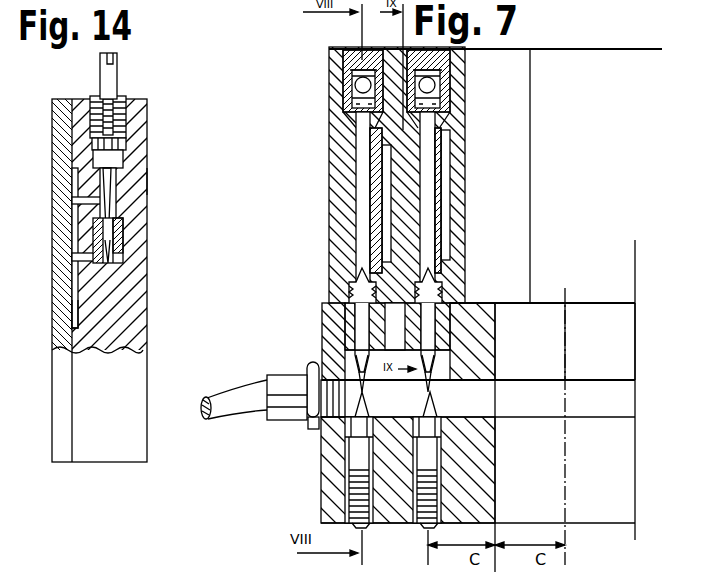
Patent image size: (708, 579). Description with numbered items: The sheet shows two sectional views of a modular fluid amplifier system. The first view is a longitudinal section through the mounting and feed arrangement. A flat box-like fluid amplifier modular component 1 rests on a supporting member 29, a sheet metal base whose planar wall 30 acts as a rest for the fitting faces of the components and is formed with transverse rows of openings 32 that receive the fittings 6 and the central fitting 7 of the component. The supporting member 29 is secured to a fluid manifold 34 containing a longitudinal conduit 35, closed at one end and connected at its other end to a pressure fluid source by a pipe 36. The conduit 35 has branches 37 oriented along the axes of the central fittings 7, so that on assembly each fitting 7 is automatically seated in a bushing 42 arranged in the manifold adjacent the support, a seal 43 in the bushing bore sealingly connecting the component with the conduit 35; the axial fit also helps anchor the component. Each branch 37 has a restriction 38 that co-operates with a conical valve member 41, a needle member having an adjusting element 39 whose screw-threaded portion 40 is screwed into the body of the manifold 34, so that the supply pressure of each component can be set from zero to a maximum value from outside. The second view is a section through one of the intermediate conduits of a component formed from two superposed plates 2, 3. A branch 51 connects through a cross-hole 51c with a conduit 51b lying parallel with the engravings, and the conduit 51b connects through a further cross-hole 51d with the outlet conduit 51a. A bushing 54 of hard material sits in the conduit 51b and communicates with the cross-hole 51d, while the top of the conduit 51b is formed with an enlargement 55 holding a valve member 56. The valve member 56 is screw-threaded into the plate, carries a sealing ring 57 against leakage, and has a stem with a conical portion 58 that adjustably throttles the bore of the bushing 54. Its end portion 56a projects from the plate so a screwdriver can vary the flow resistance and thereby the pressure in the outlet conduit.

In FIG. 7, the fluid amplifier modular component 1 is at (472, 44).
In FIG. 14, the plate 2 is at (62, 384).
In FIG. 14, the plate 3 is at (135, 382).
In FIG. 7, the fitting 6 is at (245, 2).
In FIG. 7, the central fitting 7 is at (345, 292).
In FIG. 7, the supporting member 29 is at (596, 306).
In FIG. 7, the planar wall 30 is at (627, 300).
In FIG. 7, the openings 32 is at (619, 302).
In FIG. 7, the fluid manifold 34 is at (393, 525).
In FIG. 7, the longitudinal conduit 35 is at (622, 380).
In FIG. 7, the pipe 36 is at (210, 397).
In FIG. 7, the branch 37 is at (371, 372).
In FIG. 7, the restriction 38 is at (408, 380).
In FIG. 7, the adjusting element 39 is at (350, 444).
In FIG. 7, the screw-threaded portion 40 is at (352, 490).
In FIG. 7, the conical valve member 41 is at (335, 378).
In FIG. 7, the bushing 42 is at (333, 307).
In FIG. 7, the seal 43 is at (338, 332).
In FIG. 14, the branch 51 is at (73, 182).
In FIG. 14, the outlet conduit 51a is at (76, 302).
In FIG. 14, the conduit 51b is at (143, 179).
In FIG. 14, the cross-hole 51c is at (83, 202).
In FIG. 14, the cross-hole 51d is at (87, 254).
In FIG. 14, the bushing 54 is at (124, 261).
In FIG. 14, the enlargement 55 is at (122, 160).
In FIG. 14, the valve member 56 is at (118, 97).
In FIG. 14, the end portion 56a is at (115, 69).
In FIG. 14, the sealing ring 57 is at (128, 131).
In FIG. 14, the conical portion 58 is at (115, 240).